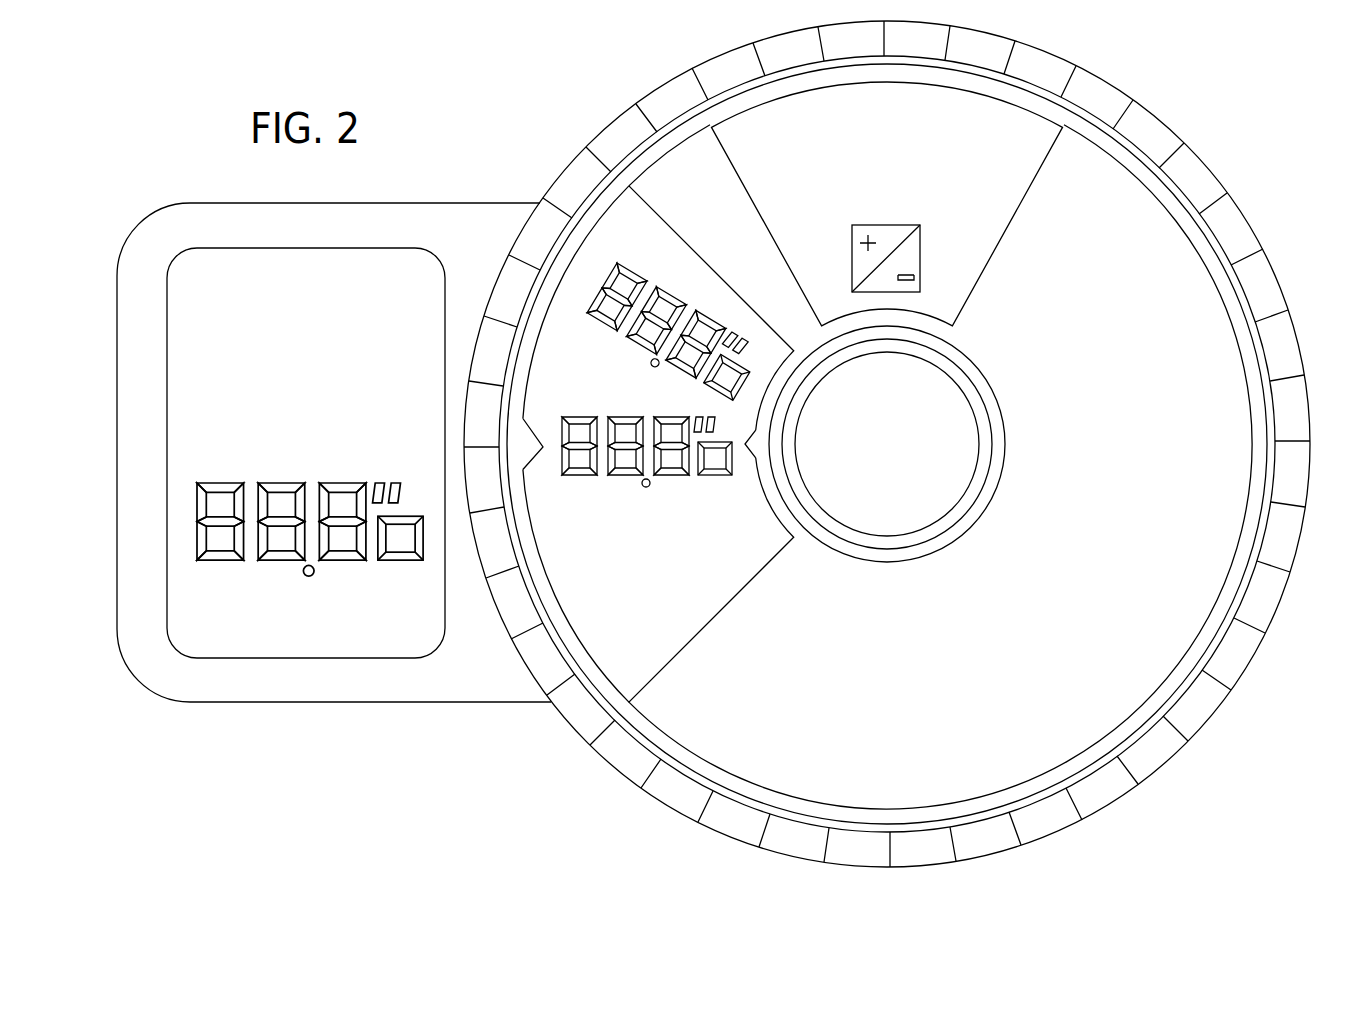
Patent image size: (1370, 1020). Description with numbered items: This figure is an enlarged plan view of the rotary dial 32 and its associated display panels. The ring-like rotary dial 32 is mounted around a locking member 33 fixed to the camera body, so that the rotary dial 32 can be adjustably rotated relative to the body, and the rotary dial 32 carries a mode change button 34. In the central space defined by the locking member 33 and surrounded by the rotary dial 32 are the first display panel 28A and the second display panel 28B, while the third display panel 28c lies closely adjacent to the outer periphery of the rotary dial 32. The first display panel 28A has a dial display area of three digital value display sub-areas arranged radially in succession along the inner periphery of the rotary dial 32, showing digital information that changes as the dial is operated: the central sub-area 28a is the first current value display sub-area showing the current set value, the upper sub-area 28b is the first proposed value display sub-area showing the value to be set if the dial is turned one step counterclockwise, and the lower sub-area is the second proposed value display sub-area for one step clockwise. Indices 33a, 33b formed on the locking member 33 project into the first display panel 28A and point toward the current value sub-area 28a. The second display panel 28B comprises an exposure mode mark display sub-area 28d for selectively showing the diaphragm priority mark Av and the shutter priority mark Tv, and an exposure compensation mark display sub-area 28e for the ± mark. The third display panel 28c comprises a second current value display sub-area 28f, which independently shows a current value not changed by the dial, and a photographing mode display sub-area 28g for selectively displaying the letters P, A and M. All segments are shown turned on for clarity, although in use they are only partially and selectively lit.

The first display panel 28A is at (743, 612).
The second display panel 28B is at (1018, 254).
The central digital value display sub-area 28a is at (625, 487).
The upper digital value display sub-area 28b is at (663, 270).
The third display panel 28c is at (297, 724).
The exposure mode mark display sub-area 28d is at (1003, 165).
The exposure compensation mark display sub-area 28e is at (848, 270).
The second current value display sub-area 28f is at (332, 568).
The photographing mode display sub-area 28g is at (292, 383).
The rotary dial 32 is at (895, 497).
The locking member 33 is at (1205, 582).
The index 33a is at (540, 440).
The index 33b is at (775, 520).
The mode change button 34 is at (923, 847).